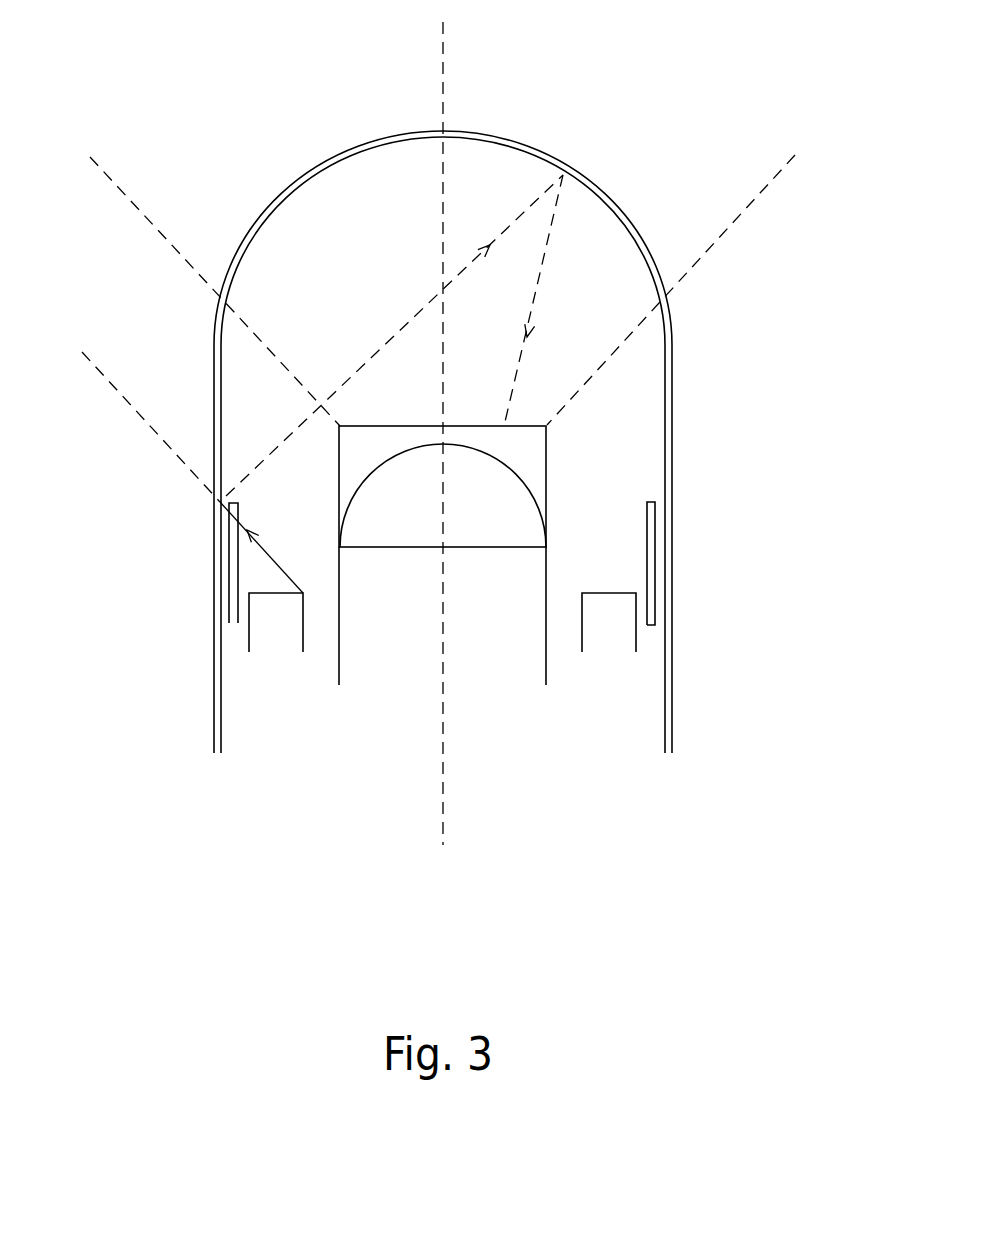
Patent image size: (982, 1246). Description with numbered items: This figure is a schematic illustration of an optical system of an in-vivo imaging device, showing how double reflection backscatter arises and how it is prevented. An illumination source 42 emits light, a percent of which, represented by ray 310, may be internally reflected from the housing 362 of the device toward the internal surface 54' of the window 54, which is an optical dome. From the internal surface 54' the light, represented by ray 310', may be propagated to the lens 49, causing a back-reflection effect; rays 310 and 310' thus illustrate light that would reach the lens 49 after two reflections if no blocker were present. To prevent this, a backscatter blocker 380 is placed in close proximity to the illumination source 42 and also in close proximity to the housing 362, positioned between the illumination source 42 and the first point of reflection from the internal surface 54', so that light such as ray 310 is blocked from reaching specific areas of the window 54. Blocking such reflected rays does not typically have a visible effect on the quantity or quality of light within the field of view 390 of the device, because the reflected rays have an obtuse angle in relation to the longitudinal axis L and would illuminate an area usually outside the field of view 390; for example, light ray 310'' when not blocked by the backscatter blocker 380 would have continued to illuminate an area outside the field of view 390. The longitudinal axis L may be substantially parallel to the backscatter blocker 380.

The longitudinal axis L is at (443, 52).
The window 54 is at (443, 221).
The window internal surface 54' is at (443, 241).
The housing 362 is at (213, 668).
The lens 49 is at (517, 483).
The backscatter blocker 380 is at (230, 573).
The illumination source 42 is at (303, 632).
The light ray 310 is at (394, 362).
The reflected light ray 310' is at (554, 300).
The light ray 310'' is at (192, 459).
The field of view 390 is at (703, 255).